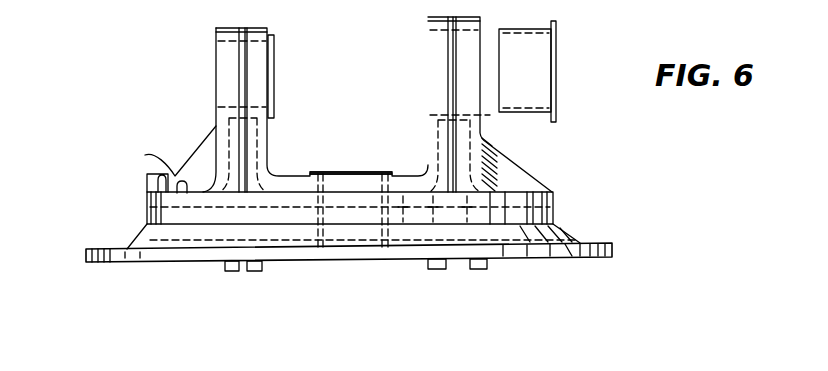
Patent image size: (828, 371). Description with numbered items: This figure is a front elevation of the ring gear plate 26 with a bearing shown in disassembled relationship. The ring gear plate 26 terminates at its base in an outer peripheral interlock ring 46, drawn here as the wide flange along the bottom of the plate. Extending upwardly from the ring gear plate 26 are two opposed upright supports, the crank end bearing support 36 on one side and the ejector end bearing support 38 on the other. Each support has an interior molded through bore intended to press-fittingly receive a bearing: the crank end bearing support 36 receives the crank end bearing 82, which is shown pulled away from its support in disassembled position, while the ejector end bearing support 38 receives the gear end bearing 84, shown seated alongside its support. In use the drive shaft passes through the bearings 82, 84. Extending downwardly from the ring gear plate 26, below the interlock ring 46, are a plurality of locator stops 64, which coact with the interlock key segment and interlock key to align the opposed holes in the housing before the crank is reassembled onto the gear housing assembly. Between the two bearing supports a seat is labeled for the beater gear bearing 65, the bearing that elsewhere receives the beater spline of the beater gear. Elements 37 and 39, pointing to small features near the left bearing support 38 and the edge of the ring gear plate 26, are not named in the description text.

The ring gear plate 26 is at (136, 141).
The crank end bearing support 36 is at (484, 160).
The stop member 37 is at (148, 184).
The ejector end bearing support 38 is at (216, 100).
The hood / guard 39 is at (145, 155).
The outer peripheral interlock ring 46 is at (100, 248).
The locator stops 64 is at (256, 276).
The beater gear bearing 65 is at (350, 171).
The crank end bearing 82 is at (540, 68).
The gear end bearing 84 is at (274, 70).